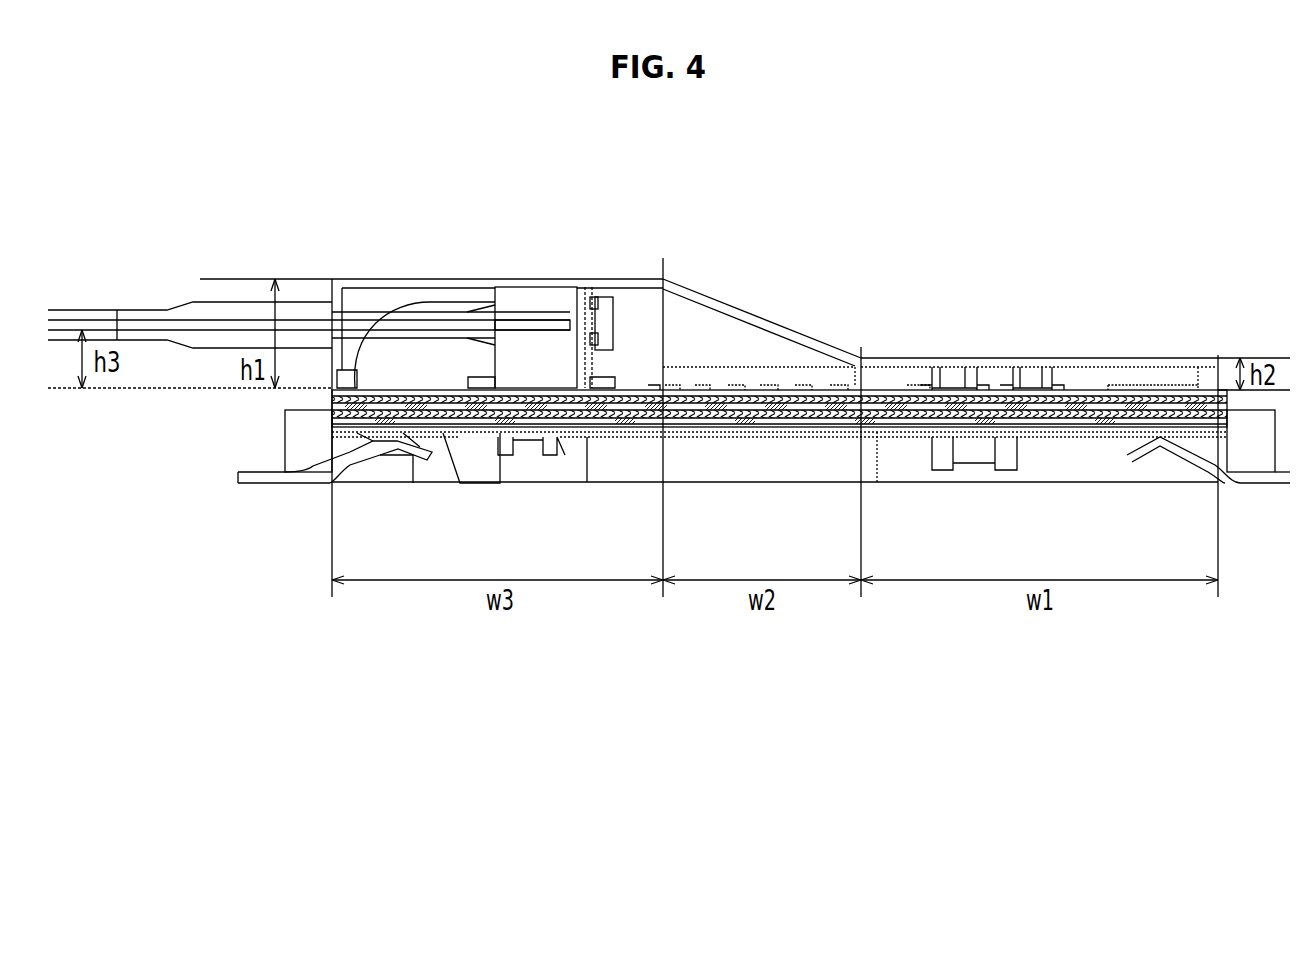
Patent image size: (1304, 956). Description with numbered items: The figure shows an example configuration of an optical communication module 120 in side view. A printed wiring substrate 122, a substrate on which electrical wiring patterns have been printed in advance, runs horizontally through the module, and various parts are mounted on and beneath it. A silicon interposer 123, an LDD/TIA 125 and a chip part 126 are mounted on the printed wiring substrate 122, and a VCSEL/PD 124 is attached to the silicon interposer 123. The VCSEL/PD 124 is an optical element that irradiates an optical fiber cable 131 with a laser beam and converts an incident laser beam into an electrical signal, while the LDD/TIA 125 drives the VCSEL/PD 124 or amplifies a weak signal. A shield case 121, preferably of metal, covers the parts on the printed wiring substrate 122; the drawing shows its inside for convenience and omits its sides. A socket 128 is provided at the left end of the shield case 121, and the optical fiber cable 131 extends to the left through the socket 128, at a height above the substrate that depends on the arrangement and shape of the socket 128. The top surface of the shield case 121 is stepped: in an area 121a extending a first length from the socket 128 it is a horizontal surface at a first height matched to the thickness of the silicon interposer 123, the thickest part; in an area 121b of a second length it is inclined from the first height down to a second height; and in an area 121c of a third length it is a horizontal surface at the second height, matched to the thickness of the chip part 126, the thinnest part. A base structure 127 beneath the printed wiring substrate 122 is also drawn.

The optical communication module 120 is at (898, 175).
The shield case 121 is at (777, 320).
The area 121a is at (444, 278).
The area 121b is at (730, 302).
The area 121c is at (982, 355).
The printed wiring substrate 122 is at (1085, 418).
The silicon interposer 123 is at (535, 287).
The VCSEL/PD 124 is at (611, 297).
The LDD/TIA 125 is at (835, 365).
The chip part 126 is at (1030, 367).
The base 127 is at (765, 458).
The socket 128 is at (302, 300).
The optical fiber cable 131 is at (92, 310).